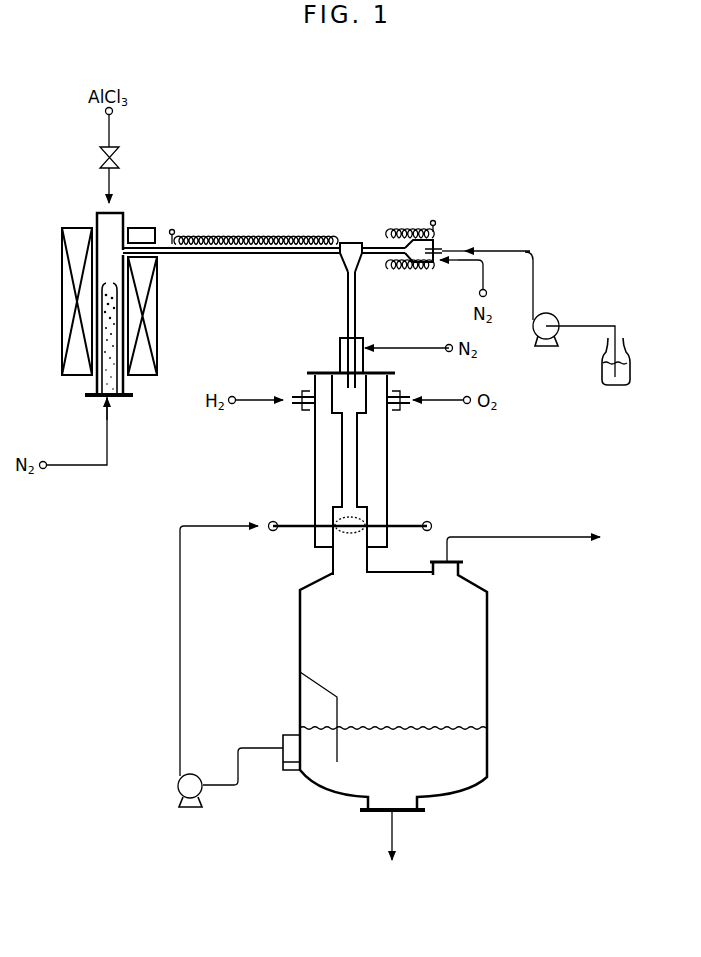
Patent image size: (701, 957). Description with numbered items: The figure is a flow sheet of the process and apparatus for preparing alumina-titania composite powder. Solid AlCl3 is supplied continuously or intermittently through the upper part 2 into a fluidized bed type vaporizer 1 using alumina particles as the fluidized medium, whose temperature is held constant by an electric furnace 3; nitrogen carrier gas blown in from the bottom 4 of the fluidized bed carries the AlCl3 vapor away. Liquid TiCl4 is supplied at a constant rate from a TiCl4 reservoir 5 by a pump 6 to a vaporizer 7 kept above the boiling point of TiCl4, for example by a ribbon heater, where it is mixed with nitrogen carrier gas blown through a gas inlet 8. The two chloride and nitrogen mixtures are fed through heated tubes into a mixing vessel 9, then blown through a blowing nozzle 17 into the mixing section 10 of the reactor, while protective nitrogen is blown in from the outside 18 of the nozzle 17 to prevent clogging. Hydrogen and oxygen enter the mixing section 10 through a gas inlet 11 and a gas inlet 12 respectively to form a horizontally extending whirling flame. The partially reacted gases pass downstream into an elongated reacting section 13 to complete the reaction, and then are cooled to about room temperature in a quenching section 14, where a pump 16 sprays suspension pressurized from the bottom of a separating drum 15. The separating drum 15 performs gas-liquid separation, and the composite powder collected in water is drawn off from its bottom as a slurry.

The vaporizer 1 is at (108, 240).
The upper part of the vaporizer 2 is at (115, 213).
The electric furnace 3 is at (60, 306).
The bottom of the fluidized bed 4 is at (110, 399).
The TiCl4 reservoir 5 is at (631, 367).
The pump 6 is at (549, 316).
The vaporizer 7 is at (418, 245).
The gas inlet 8 is at (433, 258).
The mixing vessel 9 is at (346, 262).
The mixing section 10 is at (347, 387).
The gas inlet 11 is at (294, 396).
The gas inlet 12 is at (406, 398).
The reacting section 13 is at (350, 470).
The quenching section 14 is at (348, 543).
The separating drum 15 is at (489, 675).
The pump 16 is at (179, 795).
The blowing nozzle 17 is at (348, 315).
The outside of the nozzle 18 is at (368, 340).